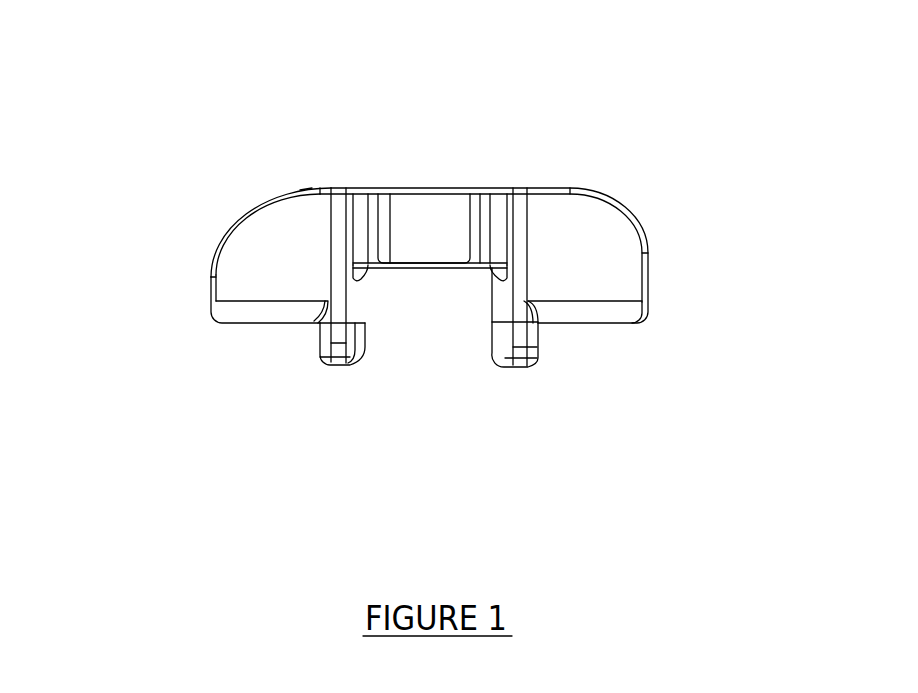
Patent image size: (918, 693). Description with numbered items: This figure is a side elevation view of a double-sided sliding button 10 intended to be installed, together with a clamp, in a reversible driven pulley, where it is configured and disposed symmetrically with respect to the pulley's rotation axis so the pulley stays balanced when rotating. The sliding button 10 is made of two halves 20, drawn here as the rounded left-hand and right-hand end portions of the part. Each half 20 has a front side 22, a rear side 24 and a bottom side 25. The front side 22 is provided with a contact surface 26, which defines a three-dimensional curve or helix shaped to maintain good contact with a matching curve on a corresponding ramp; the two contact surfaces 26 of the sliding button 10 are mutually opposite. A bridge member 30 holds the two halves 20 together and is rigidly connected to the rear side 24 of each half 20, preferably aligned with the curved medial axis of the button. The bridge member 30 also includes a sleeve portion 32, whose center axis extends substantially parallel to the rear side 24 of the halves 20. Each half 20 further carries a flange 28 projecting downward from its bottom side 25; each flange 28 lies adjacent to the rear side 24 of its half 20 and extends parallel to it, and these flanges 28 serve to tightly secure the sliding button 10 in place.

The double-sided sliding button 10 is at (717, 173).
The half 20 is at (243, 273).
The front side 22 is at (258, 220).
The rear side 24 is at (355, 312).
The bottom side 25 is at (265, 323).
The contact surface 26 is at (285, 192).
The flange 28 is at (323, 332).
The bridge member 30 is at (370, 207).
The sleeve portion 32 is at (433, 212).